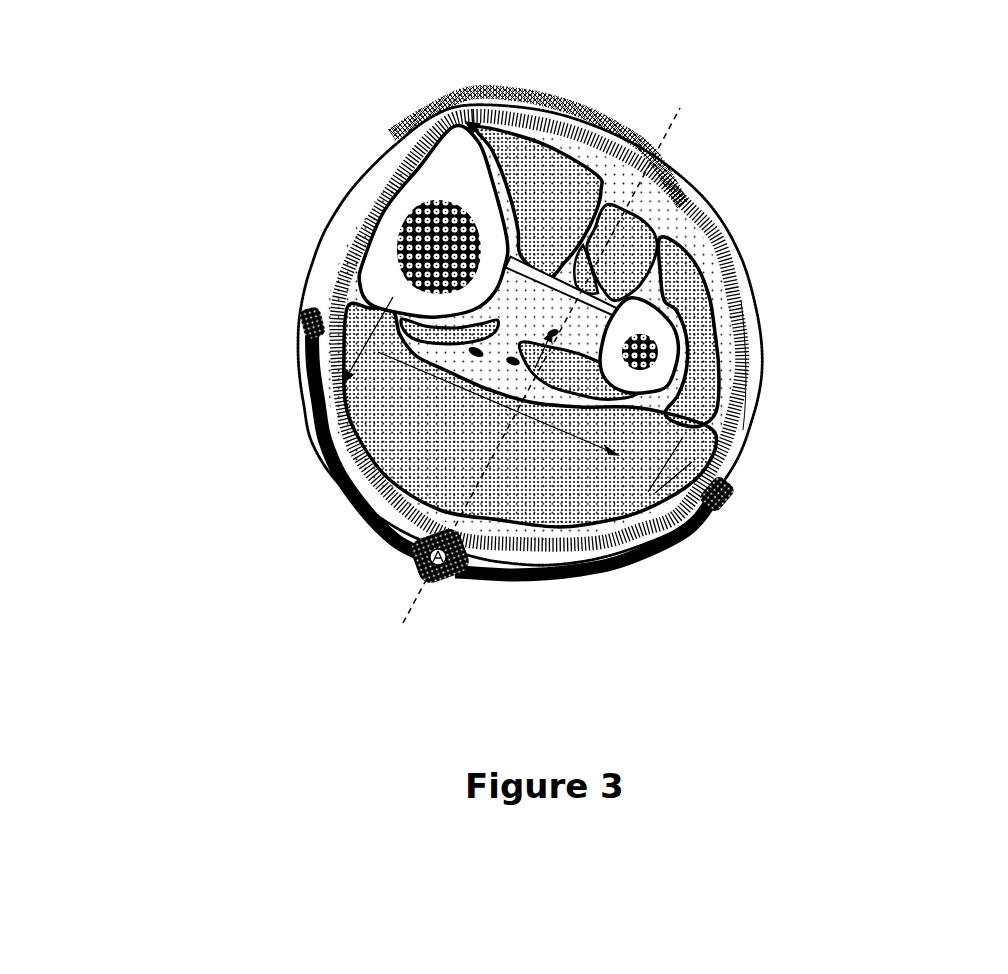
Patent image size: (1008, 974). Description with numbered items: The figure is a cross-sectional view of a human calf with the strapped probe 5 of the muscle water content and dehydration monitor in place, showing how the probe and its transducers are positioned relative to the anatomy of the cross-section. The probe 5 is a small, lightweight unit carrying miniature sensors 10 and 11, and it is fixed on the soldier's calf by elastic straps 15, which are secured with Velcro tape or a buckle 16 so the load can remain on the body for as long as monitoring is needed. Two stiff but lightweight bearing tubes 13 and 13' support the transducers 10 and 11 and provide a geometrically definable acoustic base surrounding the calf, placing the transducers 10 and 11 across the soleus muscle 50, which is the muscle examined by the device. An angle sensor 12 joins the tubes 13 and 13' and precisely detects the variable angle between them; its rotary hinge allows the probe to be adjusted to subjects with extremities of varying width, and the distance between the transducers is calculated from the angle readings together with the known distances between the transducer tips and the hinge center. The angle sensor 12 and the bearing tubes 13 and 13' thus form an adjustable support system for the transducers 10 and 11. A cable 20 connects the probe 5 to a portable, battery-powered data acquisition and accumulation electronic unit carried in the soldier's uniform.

The probe 5 is at (196, 375).
The sensor 10 is at (298, 320).
The sensor 11 is at (732, 494).
The angle sensor 12 is at (415, 565).
The bearing tube 13 is at (289, 443).
The bearing tube 13' is at (598, 574).
The elastic strap 15 is at (750, 298).
The buckle 16 is at (520, 100).
The cable 20 is at (463, 582).
The soleus muscle 50 is at (420, 425).